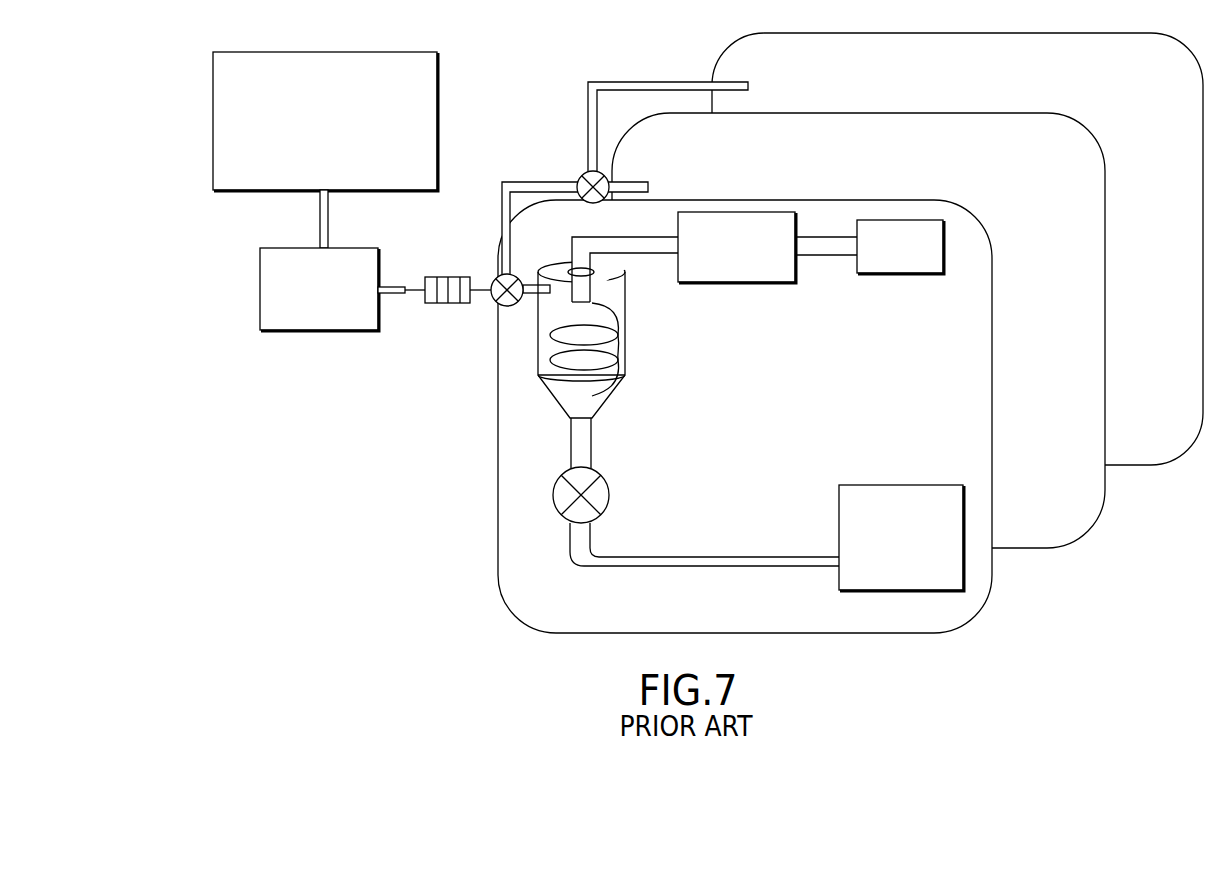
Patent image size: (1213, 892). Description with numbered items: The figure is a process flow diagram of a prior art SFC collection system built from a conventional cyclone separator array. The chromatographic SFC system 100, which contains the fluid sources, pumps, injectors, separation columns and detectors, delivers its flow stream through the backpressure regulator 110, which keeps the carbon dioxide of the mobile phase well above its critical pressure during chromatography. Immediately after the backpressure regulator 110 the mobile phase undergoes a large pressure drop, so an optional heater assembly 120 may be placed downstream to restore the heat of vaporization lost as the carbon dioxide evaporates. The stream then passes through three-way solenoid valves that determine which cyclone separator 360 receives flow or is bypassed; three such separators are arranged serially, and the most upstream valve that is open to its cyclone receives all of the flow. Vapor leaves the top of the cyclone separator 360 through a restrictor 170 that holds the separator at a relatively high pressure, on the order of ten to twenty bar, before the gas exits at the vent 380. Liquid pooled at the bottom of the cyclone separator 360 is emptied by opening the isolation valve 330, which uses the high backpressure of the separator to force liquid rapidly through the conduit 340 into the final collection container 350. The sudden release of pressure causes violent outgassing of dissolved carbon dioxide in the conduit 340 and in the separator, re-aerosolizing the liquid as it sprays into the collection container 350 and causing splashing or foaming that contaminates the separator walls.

The SFC system 100 is at (213, 161).
The backpressure regulator 110 is at (295, 331).
The heater assembly 120 is at (450, 277).
The restrictor 170 is at (738, 212).
The isolation valve 330 is at (610, 480).
The conduit 340 is at (725, 557).
The collection container 350 is at (900, 485).
The cyclone separator 360 is at (550, 352).
The vent 380 is at (912, 220).